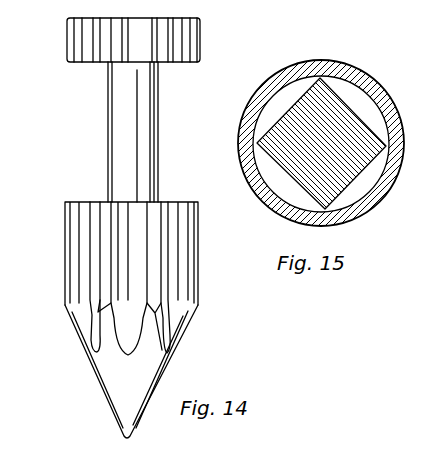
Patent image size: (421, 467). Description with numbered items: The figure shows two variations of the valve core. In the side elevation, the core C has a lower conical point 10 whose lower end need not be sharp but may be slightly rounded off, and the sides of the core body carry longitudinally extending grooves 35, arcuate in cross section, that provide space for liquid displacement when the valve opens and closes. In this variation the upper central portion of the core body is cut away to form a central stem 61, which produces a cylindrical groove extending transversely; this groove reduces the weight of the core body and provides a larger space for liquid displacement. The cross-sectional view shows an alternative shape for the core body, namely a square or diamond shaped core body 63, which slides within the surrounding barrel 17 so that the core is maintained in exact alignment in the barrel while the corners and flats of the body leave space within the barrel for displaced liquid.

In FIG. 14, the conical point 10 is at (135, 397).
In FIG. 15, the barrel 17 is at (247, 122).
In FIG. 14, the grooves 35 is at (98, 297).
In FIG. 14, the central stem 61 is at (131, 162).
In FIG. 15, the square or diamond shaped core body 63 is at (287, 142).
In FIG. 14, the core C is at (139, 253).